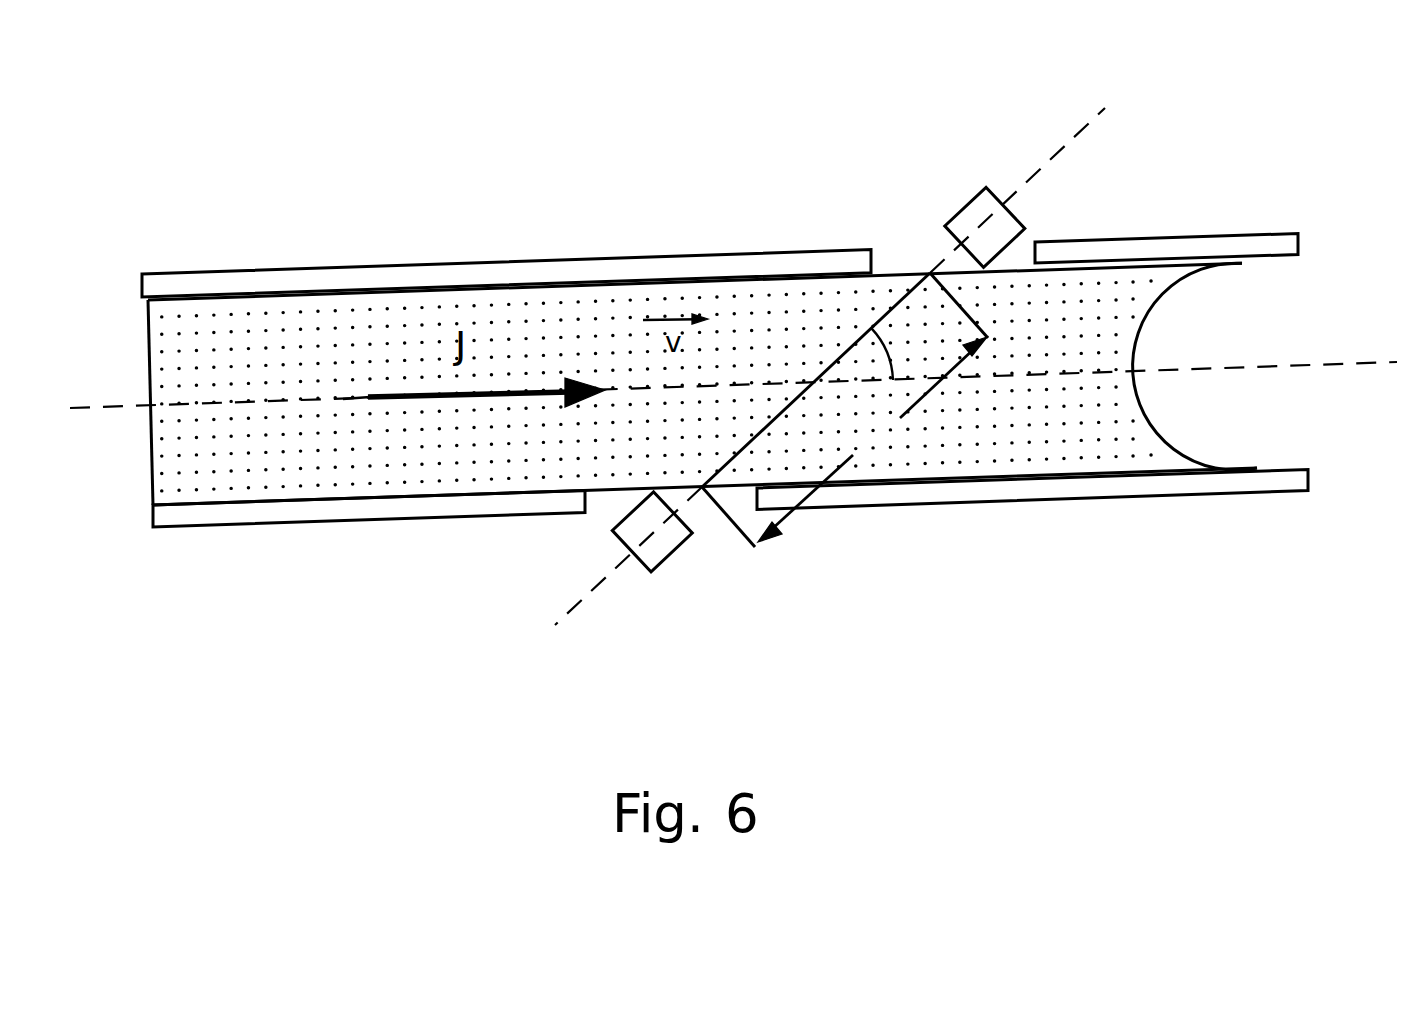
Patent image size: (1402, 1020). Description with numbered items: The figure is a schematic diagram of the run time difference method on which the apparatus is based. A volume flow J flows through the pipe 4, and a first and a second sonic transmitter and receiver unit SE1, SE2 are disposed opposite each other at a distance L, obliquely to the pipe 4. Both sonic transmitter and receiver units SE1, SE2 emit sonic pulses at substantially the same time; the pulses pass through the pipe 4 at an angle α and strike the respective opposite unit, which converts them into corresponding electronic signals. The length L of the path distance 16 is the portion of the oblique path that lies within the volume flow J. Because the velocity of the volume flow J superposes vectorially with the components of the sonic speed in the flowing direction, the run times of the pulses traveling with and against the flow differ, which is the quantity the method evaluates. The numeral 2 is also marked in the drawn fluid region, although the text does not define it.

The measuring tube 2 is at (702, 384).
The pipe 4 is at (338, 278).
The path distance 16 is at (752, 438).
The first sonic transmitter and receiver unit SE1 is at (653, 547).
The second sonic transmitter and receiver unit SE2 is at (977, 203).